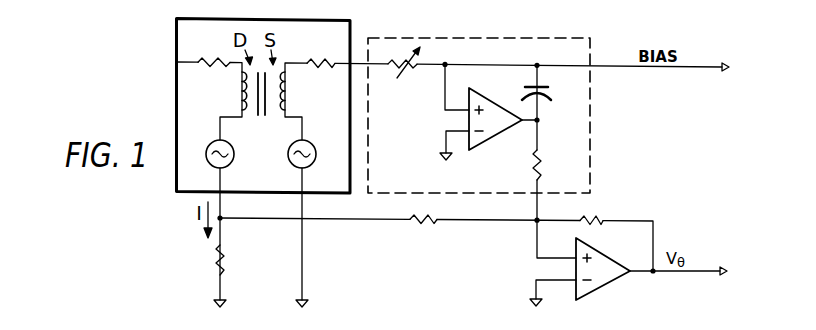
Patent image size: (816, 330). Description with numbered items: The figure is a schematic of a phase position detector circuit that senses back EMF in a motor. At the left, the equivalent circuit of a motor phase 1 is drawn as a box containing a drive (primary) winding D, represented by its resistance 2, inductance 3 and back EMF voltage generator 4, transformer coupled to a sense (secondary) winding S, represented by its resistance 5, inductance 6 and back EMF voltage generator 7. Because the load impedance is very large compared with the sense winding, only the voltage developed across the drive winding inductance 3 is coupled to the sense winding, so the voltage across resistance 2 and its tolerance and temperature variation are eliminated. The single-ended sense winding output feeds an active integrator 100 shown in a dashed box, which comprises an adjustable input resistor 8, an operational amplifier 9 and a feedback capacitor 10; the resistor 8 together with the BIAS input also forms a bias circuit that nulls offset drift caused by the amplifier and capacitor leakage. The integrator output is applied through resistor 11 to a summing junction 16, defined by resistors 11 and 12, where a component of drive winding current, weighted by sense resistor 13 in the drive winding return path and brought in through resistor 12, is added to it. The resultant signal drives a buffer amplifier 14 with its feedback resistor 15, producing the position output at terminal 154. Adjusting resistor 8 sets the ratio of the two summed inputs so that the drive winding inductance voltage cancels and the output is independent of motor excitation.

The motor phase 1 is at (175, 93).
The resistance 2 is at (213, 58).
The inductance 3 is at (241, 88).
The back EMF voltage generator 4 is at (210, 144).
The resistance 5 is at (323, 58).
The inductance 6 is at (286, 92).
The back EMF voltage generator 7 is at (313, 144).
The input resistor 8 is at (399, 60).
The operational amplifier 9 is at (487, 142).
The feedback capacitor 10 is at (552, 92).
The resistor 11 is at (541, 176).
The resistor 12 is at (428, 228).
The sense resistor 13 is at (213, 257).
The buffer amplifier 14 is at (597, 292).
The feedback resistor 15 is at (600, 216).
The summing junction 16 is at (533, 224).
The active integrator 100 is at (507, 38).
The terminal 154 is at (653, 272).